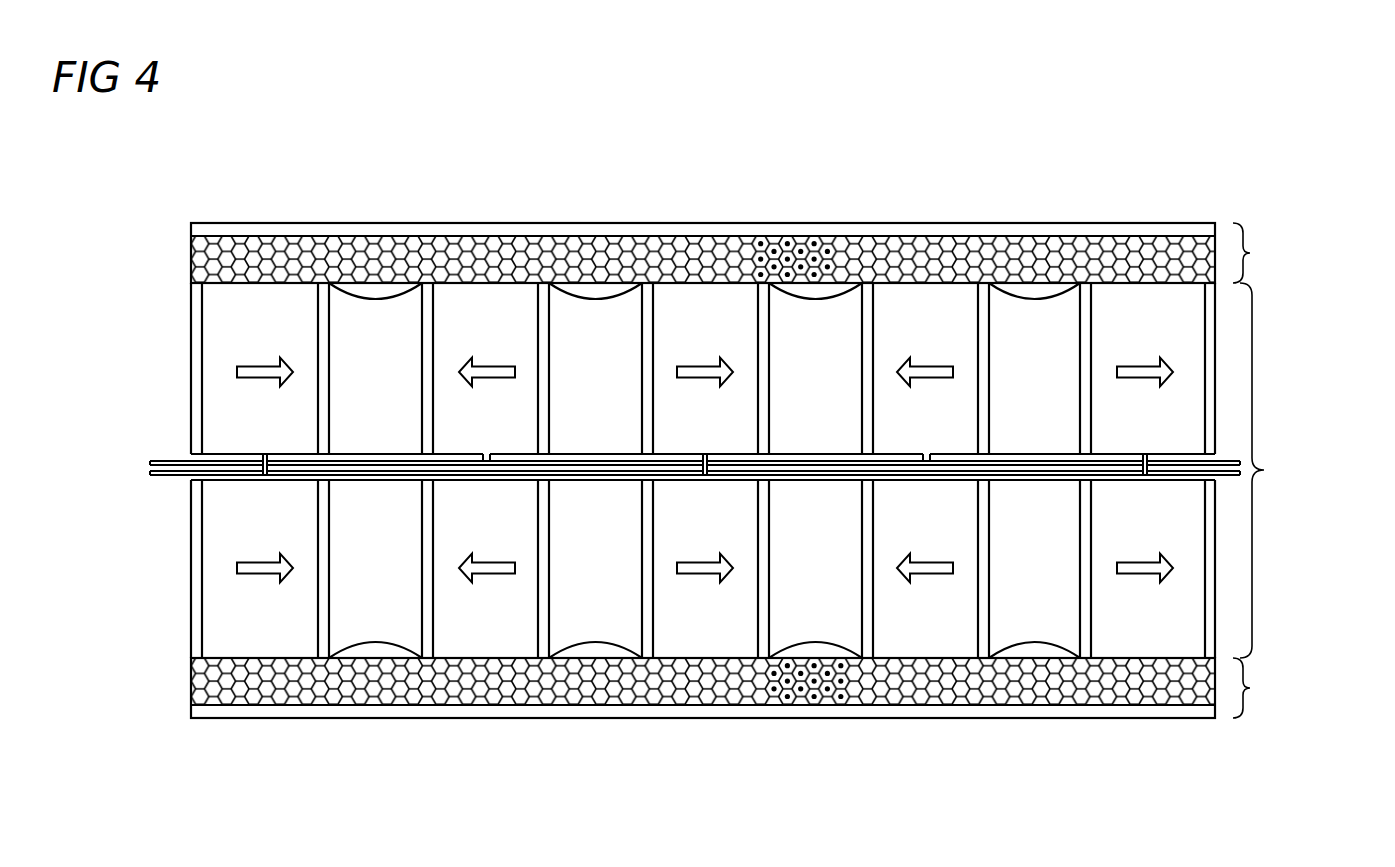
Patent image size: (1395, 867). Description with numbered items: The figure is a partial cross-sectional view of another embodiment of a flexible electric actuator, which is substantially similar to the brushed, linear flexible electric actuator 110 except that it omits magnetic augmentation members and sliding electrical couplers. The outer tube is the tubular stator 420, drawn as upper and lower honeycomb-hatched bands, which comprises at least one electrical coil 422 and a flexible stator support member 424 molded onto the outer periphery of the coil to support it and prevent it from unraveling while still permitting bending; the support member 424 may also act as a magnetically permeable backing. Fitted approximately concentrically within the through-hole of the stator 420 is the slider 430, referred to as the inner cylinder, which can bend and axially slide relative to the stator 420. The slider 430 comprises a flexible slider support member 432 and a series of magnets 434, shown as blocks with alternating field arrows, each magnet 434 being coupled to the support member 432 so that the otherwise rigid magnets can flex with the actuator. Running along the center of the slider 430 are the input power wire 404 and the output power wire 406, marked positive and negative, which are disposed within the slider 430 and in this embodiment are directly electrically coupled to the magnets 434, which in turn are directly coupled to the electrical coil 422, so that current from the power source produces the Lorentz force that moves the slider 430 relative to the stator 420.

The flexible electric actuator 110 is at (893, 90).
The tubular stator 420 is at (1066, 220).
The slider 430 is at (188, 256).
The electrical coil 422 is at (188, 684).
The flexible stator support member 424 is at (366, 720).
The input power wire 404 is at (152, 461).
The output power wire 406 is at (152, 476).
The magnet 434 is at (703, 470).
The flexible slider support member 432 is at (704, 470).